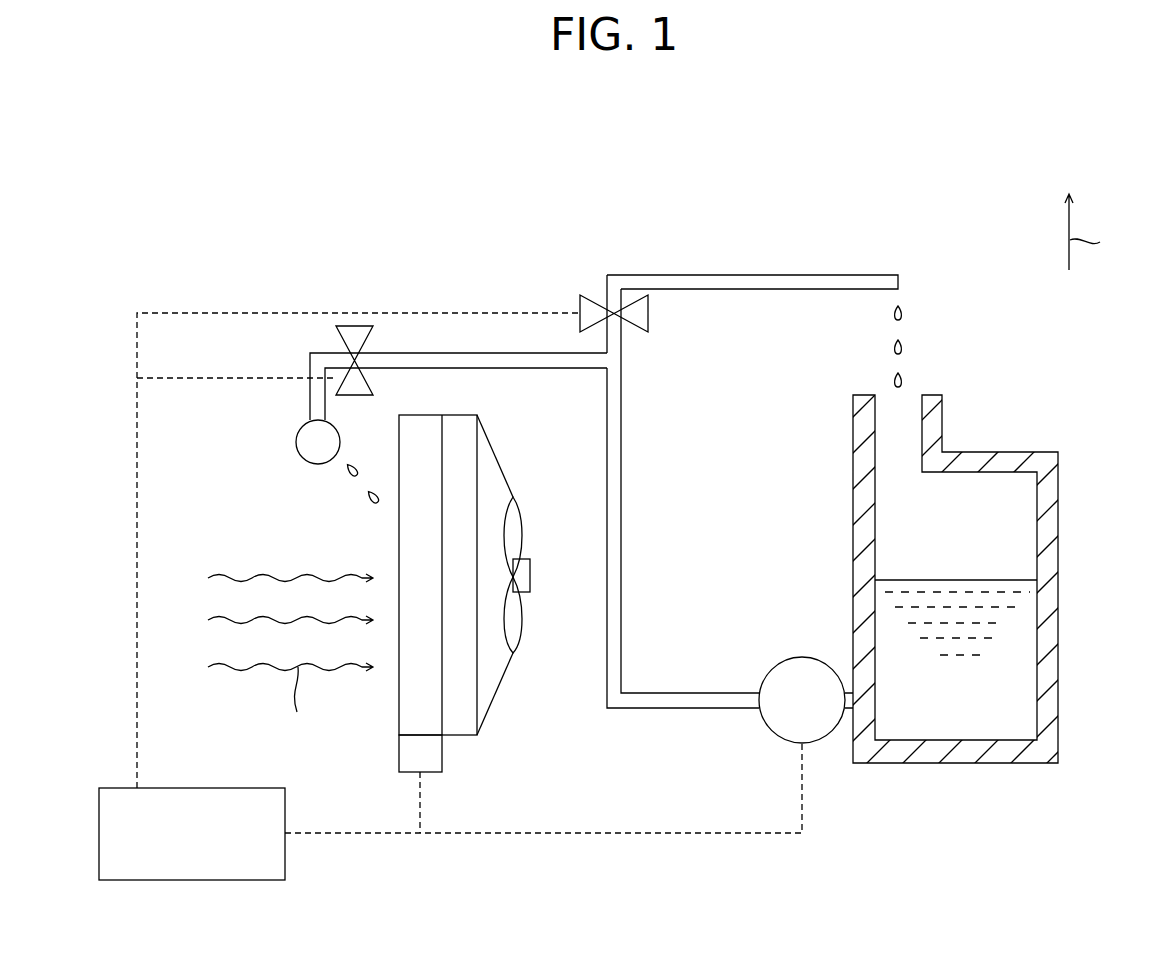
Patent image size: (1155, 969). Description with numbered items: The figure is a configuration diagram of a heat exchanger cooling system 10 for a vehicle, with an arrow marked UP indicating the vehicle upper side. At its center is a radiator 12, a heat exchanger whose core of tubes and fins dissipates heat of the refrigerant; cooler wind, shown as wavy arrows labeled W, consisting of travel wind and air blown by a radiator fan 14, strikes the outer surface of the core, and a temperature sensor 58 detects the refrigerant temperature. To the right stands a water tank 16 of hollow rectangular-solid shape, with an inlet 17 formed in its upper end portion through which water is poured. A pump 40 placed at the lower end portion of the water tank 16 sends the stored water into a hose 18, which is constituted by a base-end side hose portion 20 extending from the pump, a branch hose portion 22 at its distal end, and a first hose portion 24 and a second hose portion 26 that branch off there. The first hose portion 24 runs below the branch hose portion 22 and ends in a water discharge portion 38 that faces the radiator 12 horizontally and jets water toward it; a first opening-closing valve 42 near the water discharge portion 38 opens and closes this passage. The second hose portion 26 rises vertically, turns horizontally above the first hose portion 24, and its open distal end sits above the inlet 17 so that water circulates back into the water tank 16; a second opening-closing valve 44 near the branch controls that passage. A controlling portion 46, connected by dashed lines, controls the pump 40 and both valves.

The heat exchanger cooling system 10 is at (558, 170).
The radiator 12 is at (399, 690).
The radiator fan 14 is at (530, 577).
The water tank 16 is at (1058, 517).
The inlet 17 is at (920, 408).
The hose 18 is at (622, 503).
The base-end side hose portion 20 is at (622, 580).
The branch hose portion 22 is at (621, 355).
The first hose portion 24 is at (508, 368).
The second hose portion 26 is at (750, 275).
The water discharge portion 38 is at (305, 461).
The pump 40 is at (808, 657).
The first opening-closing valve 42 is at (337, 345).
The second opening-closing valve 44 is at (596, 292).
The controlling portion 46 is at (212, 788).
The temperature sensor 58 is at (442, 752).